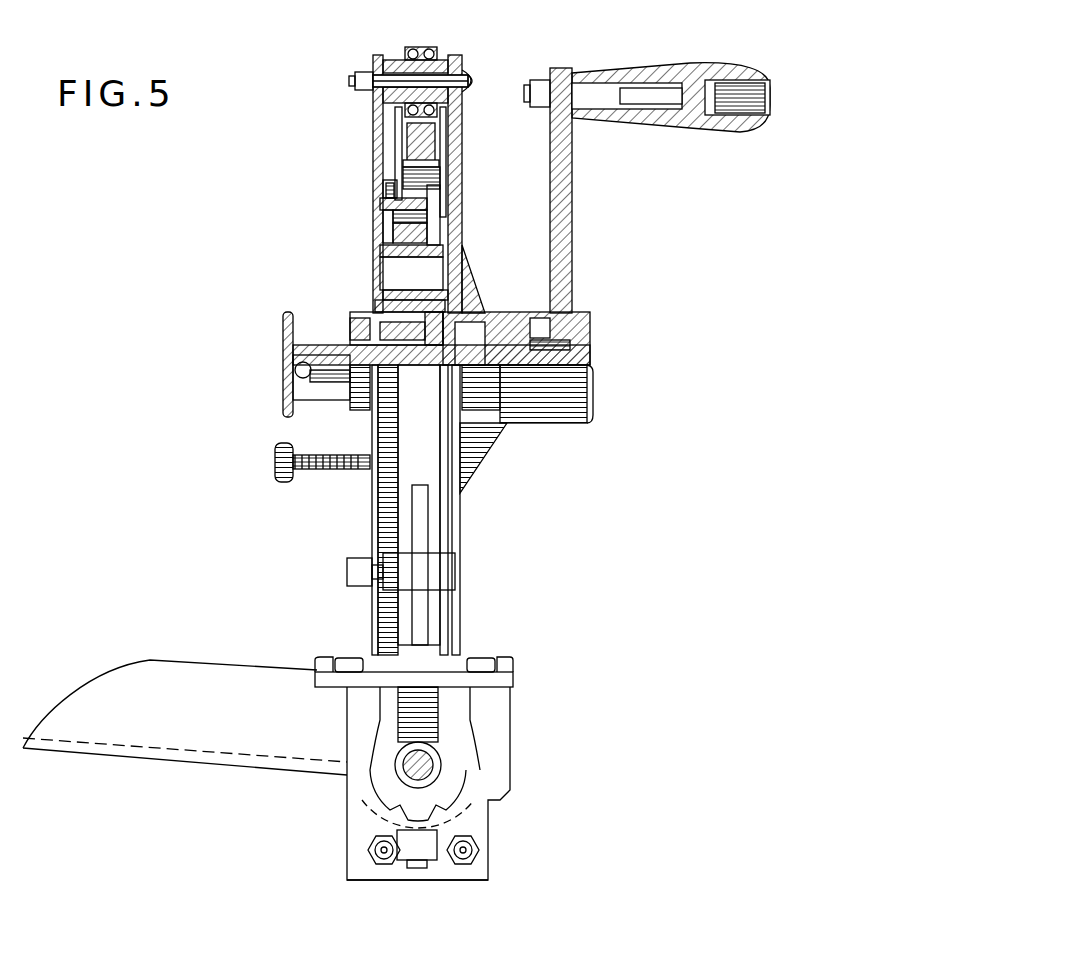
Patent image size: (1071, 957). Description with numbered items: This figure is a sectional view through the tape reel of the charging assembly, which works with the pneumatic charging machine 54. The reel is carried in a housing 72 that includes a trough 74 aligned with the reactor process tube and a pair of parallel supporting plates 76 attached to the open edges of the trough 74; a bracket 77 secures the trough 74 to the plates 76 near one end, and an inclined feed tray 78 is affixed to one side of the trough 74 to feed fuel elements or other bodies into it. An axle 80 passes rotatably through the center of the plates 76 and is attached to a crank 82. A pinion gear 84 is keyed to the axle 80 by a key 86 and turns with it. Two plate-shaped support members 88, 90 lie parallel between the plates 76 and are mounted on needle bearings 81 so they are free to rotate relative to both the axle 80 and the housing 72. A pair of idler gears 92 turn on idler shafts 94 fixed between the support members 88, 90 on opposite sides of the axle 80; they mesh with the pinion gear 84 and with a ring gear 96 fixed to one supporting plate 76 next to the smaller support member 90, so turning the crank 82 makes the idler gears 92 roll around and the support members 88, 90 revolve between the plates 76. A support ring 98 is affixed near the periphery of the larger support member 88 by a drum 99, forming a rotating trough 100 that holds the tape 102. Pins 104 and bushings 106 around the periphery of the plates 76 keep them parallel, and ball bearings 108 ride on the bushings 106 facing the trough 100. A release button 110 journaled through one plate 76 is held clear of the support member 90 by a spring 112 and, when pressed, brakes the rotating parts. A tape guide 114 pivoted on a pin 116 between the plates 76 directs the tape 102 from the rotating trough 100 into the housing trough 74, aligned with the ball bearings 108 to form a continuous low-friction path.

The pneumatic charging machine 54 is at (395, 758).
The housing 72 is at (468, 555).
The trough 74 is at (476, 820).
The supporting plates 76 is at (373, 132).
The bracket 77 is at (437, 876).
The feed tray 78 is at (198, 745).
The axle 80 is at (525, 423).
The needle bearings 81 is at (360, 325).
The crank 82 is at (572, 190).
The pinion gear 84 is at (418, 365).
The key 86 is at (283, 355).
The support member 88 is at (440, 215).
The support member 90 is at (383, 233).
The idler gears 92 is at (393, 218).
The idler shafts 94 is at (395, 262).
The ring gear 96 is at (383, 192).
The support ring 98 is at (395, 115).
The drum 99 is at (440, 178).
The trough 100 is at (440, 151).
The tape 102 is at (395, 153).
The pins 104 is at (460, 80).
The bushings 106 is at (390, 62).
The ball bearings 108 is at (425, 47).
The release button 110 is at (277, 470).
The spring 112 is at (340, 469).
The tape guide 114 is at (420, 465).
The pin 116 is at (347, 572).